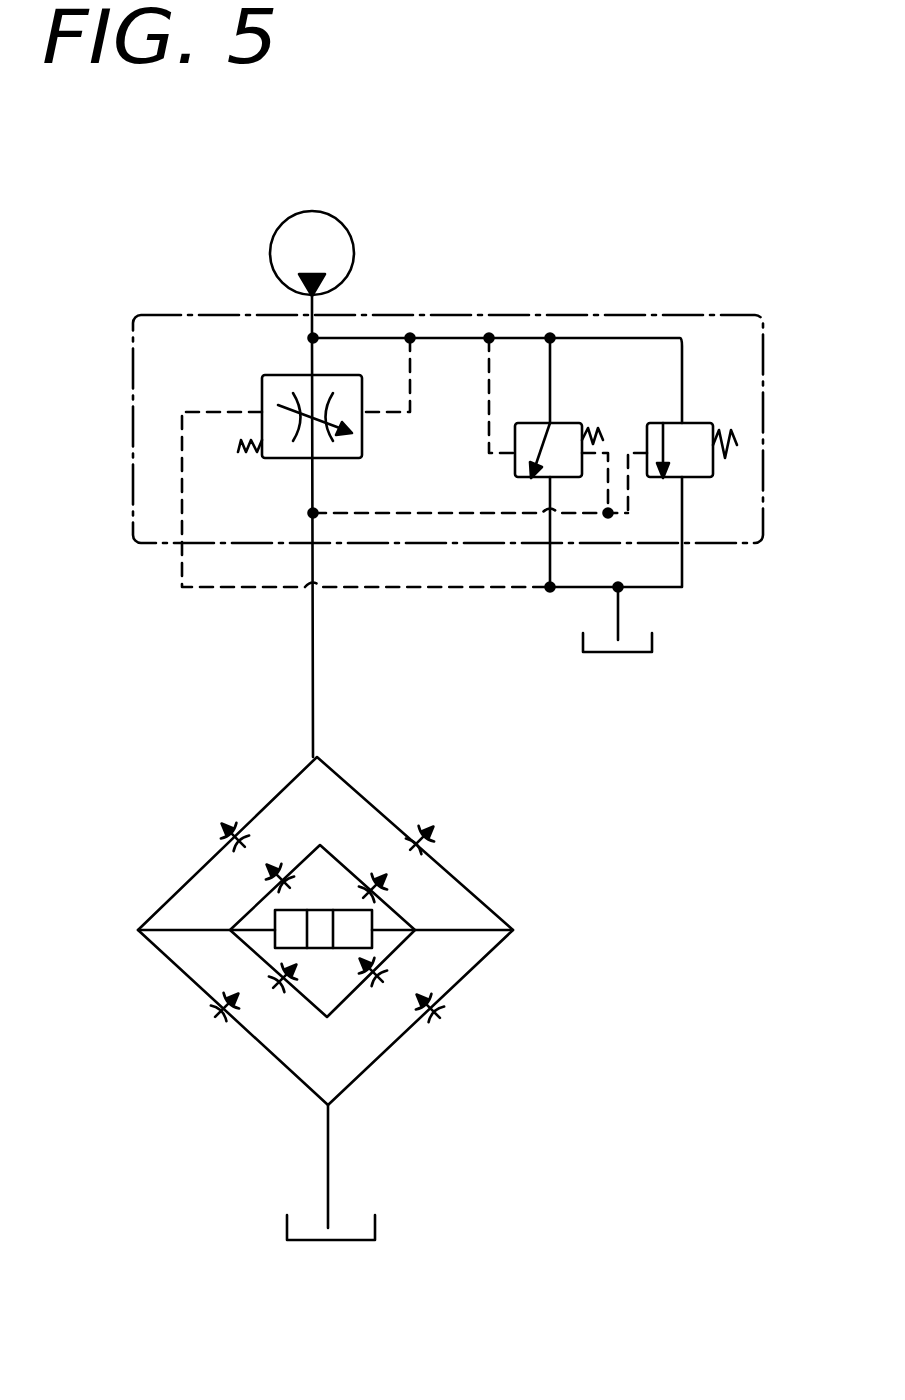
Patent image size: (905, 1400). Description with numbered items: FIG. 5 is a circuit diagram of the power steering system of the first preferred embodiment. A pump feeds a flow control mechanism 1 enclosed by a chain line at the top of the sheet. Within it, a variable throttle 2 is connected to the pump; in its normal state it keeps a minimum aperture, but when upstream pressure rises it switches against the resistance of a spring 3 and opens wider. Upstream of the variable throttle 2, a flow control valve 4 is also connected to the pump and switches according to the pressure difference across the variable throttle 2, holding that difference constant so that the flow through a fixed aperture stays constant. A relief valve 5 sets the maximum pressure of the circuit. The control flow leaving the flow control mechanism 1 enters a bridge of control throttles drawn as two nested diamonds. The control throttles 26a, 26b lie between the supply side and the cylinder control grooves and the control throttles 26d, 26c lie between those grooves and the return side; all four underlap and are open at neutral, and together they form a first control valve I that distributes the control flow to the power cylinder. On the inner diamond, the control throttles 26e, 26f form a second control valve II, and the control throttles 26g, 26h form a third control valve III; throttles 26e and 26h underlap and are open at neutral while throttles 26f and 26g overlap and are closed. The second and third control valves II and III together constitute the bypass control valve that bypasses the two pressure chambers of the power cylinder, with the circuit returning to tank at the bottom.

The flow control mechanism 1 is at (686, 313).
The variable throttle 2 is at (262, 372).
The spring 3 is at (253, 452).
The flow control valve 4 is at (577, 412).
The relief valve 5 is at (710, 423).
The control throttle 26a is at (227, 820).
The control throttle 26b is at (440, 838).
The control throttle 26c is at (447, 1013).
The control throttle 26d is at (223, 1025).
The control throttle 26e is at (275, 860).
The control throttle 26f is at (392, 885).
The control throttle 26g is at (382, 990).
The control throttle 26h is at (280, 995).
The first control valve I is at (612, 863).
The second control valve II is at (390, 691).
The third control valve III is at (270, 1214).